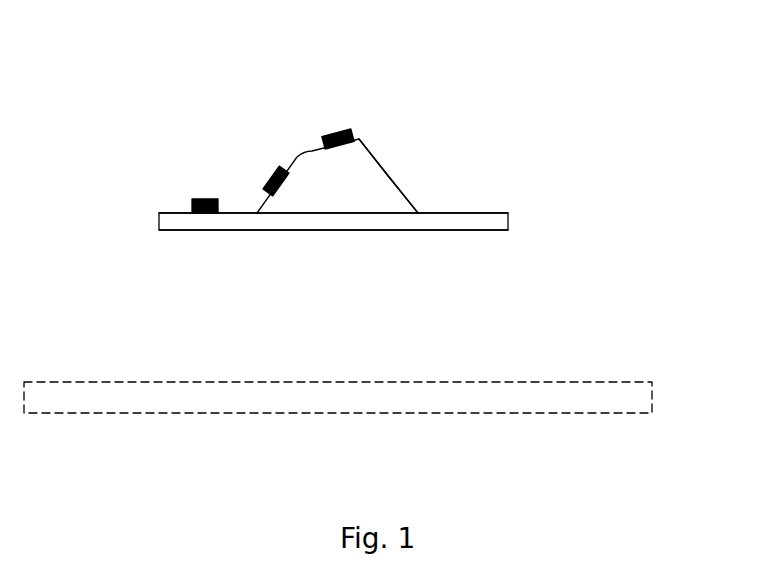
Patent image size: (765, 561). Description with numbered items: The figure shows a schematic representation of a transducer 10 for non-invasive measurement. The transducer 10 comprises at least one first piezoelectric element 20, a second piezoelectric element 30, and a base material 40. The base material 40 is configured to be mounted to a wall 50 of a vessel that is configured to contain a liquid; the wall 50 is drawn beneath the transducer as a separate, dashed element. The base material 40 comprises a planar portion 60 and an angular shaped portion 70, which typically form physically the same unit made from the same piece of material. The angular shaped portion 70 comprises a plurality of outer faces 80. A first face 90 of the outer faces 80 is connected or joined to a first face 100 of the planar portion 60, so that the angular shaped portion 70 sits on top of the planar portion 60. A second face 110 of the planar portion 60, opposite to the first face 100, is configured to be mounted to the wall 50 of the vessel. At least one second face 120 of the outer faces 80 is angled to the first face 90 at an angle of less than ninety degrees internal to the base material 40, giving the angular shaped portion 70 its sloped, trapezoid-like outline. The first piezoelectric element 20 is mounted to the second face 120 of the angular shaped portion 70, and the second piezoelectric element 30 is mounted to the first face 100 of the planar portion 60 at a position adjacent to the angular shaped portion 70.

The transducer 10 is at (668, 103).
The first piezoelectric element 20 is at (272, 170).
The second piezoelectric element 30 is at (193, 200).
The base material 40 is at (442, 124).
The wall 50 is at (372, 413).
The planar portion 60 is at (456, 213).
The angular shaped portion 70 is at (367, 150).
The outer faces 80 is at (335, 163).
The first face of the angular shaped portion 90 is at (307, 213).
The first face of the planar portion 100 is at (507, 213).
The second face of the planar portion 110 is at (418, 230).
The second face of the angular shaped portion 120 is at (297, 157).